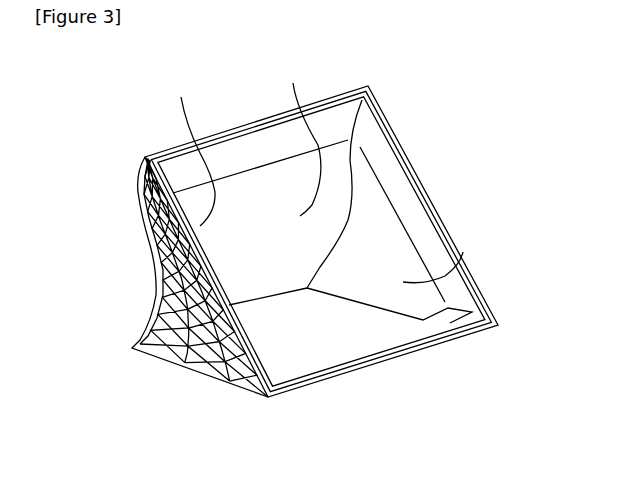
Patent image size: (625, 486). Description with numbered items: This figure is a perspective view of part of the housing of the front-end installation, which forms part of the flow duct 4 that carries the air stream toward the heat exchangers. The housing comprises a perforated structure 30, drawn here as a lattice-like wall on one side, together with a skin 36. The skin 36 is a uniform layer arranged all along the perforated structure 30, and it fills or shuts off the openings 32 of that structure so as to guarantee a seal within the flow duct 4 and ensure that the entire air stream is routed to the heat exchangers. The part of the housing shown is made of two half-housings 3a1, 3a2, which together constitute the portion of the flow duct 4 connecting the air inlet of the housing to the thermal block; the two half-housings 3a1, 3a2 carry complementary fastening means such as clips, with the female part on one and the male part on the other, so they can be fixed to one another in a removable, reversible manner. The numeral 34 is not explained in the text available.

The perforated structure 30 is at (459, 218).
The openings 32 is at (151, 293).
The lattice reinforcement structure 34 is at (163, 352).
The skin 36 is at (463, 256).
The flow duct 4 is at (322, 211).
The half-housing 3a1 is at (186, 148).
The half-housing 3a2 is at (301, 136).